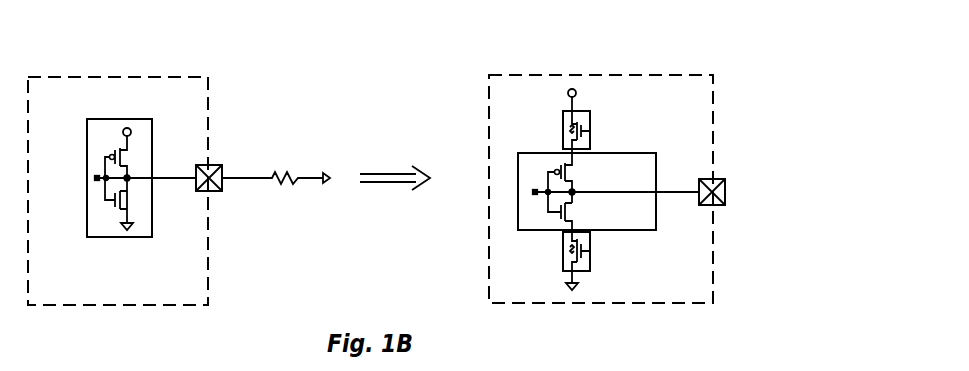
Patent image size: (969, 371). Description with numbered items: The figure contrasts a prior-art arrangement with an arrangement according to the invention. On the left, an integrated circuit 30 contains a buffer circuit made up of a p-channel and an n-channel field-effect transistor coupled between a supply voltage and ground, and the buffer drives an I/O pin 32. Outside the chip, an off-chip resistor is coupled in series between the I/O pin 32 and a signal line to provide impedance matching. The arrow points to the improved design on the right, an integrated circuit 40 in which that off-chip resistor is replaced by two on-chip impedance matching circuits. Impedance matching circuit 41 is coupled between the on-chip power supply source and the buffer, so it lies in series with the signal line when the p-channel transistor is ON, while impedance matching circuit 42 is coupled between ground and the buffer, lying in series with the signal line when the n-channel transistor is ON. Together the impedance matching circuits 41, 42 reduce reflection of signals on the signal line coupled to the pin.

The integrated circuit 30 is at (92, 77).
The I/O pin 32 is at (219, 166).
The integrated circuit 40 is at (608, 74).
The impedance matching circuit 41 is at (590, 112).
The impedance matching circuit 42 is at (590, 258).